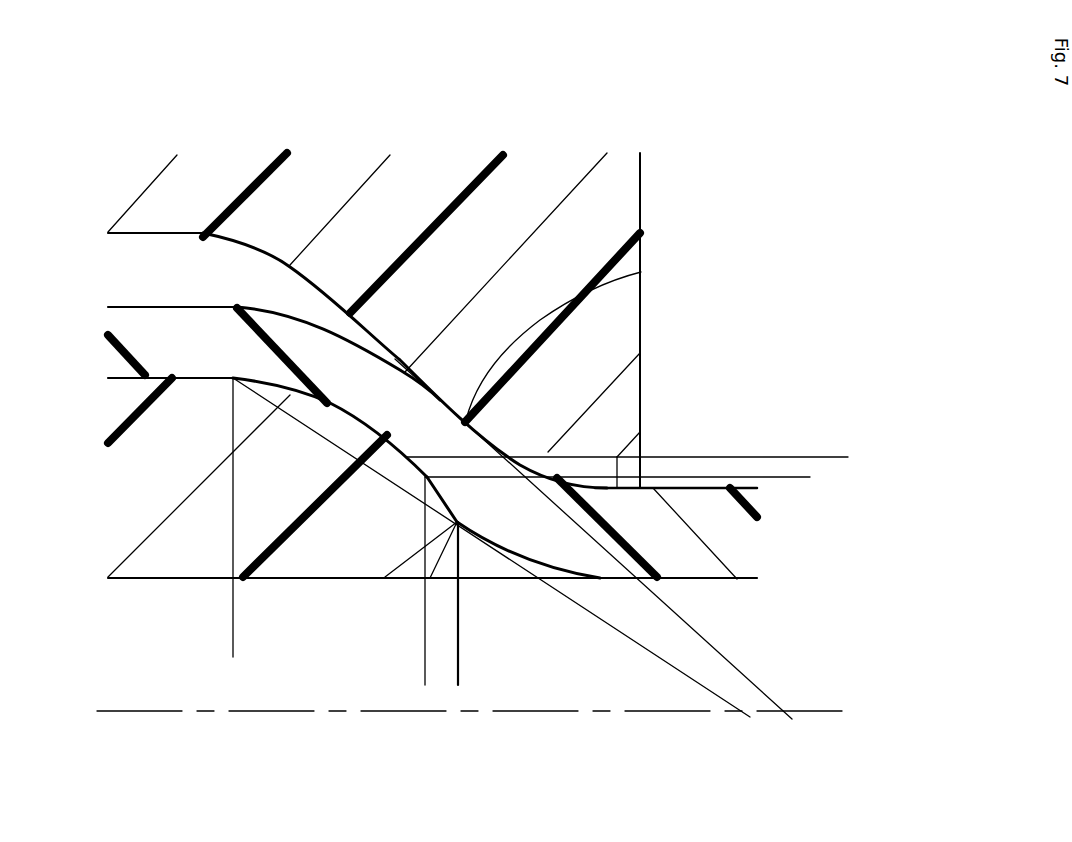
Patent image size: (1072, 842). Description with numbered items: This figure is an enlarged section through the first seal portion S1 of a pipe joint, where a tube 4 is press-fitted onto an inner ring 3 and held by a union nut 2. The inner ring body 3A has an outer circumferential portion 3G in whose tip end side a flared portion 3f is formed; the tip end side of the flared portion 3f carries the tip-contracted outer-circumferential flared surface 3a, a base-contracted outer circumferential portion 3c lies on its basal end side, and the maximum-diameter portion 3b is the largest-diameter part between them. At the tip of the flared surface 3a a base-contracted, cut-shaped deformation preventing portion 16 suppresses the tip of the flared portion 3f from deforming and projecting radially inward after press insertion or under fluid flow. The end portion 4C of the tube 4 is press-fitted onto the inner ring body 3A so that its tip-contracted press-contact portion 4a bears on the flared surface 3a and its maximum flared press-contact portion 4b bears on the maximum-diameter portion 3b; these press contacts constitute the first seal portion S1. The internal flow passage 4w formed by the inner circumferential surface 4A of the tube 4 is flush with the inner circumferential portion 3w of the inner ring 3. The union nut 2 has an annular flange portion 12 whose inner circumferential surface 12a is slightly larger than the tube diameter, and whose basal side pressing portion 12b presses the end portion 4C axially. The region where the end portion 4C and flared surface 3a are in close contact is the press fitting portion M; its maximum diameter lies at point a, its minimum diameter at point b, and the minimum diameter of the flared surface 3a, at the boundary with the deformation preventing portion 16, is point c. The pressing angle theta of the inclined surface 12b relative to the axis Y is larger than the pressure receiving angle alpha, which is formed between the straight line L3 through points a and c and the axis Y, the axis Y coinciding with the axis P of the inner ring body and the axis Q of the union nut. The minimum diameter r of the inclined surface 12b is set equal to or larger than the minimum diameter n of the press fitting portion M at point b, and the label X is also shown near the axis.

The union nut 2 is at (645, 195).
The inner ring 3 is at (163, 578).
The tip-contracted outer-circumferential flared surface 3a is at (376, 326).
The maximum-diameter portion 3b is at (178, 377).
The base-contracted outer circumferential portion 3c is at (112, 377).
The flared portion 3f is at (303, 400).
The inner ring body 3A is at (138, 577).
The outer circumferential portion 3G is at (190, 323).
The inner circumferential portion 3w is at (182, 580).
The tube 4 is at (748, 487).
The tip-contracted press-contact portion 4a is at (467, 413).
The inner circumferential surface 4A is at (383, 437).
The maximum flared press-contact portion 4b is at (185, 340).
The end portion 4C is at (233, 374).
The internal flow passage 4w is at (725, 580).
The flange portion 12 is at (641, 335).
The inner circumferential surface 12a is at (620, 468).
The pressing portion 12b is at (641, 272).
The deformation preventing portion 16 is at (457, 570).
The point a is at (230, 368).
The point b is at (547, 453).
The point c is at (460, 521).
The first seal portion S1 is at (400, 432).
The straight line L3 is at (600, 616).
The press fitting portion M is at (425, 648).
The minimum diameter of press fitting portion n is at (810, 477).
The minimum diameter of inclined inner circumferential surface r is at (848, 457).
The pressing angle theta is at (708, 723).
The pressure receiving angle alpha is at (683, 680).
The axis Y is at (125, 710).
The axis of inner ring body P is at (383, 714).
The axis of union nut Q is at (478, 716).
The point X is at (518, 716).